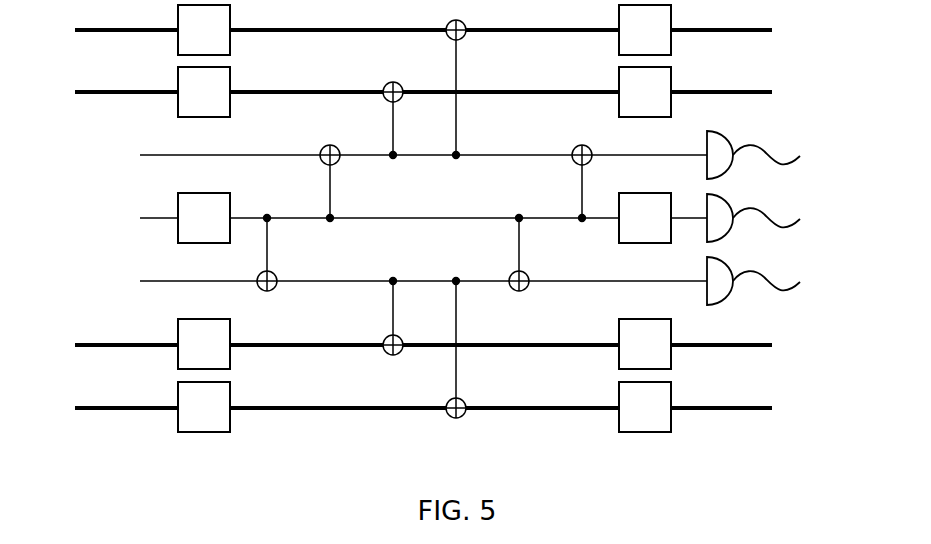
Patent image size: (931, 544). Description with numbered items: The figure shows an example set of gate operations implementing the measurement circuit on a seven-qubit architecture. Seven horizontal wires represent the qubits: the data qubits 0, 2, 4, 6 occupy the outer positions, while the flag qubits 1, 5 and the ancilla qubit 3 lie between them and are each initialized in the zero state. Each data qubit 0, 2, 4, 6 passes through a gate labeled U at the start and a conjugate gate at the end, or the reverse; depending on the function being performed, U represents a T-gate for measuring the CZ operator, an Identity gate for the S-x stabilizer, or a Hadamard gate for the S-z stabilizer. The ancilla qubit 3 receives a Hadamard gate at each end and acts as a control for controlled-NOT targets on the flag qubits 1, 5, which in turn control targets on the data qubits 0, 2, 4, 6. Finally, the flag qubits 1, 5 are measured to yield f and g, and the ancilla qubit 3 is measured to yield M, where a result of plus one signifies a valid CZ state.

The data qubit 0 is at (405, 30).
The data qubit 2 is at (405, 92).
The data qubit 4 is at (405, 344).
The data qubit 6 is at (405, 407).
The flag qubit 1 is at (457, 155).
The ancilla qubit 3 is at (457, 218).
The flag qubit 5 is at (459, 281).